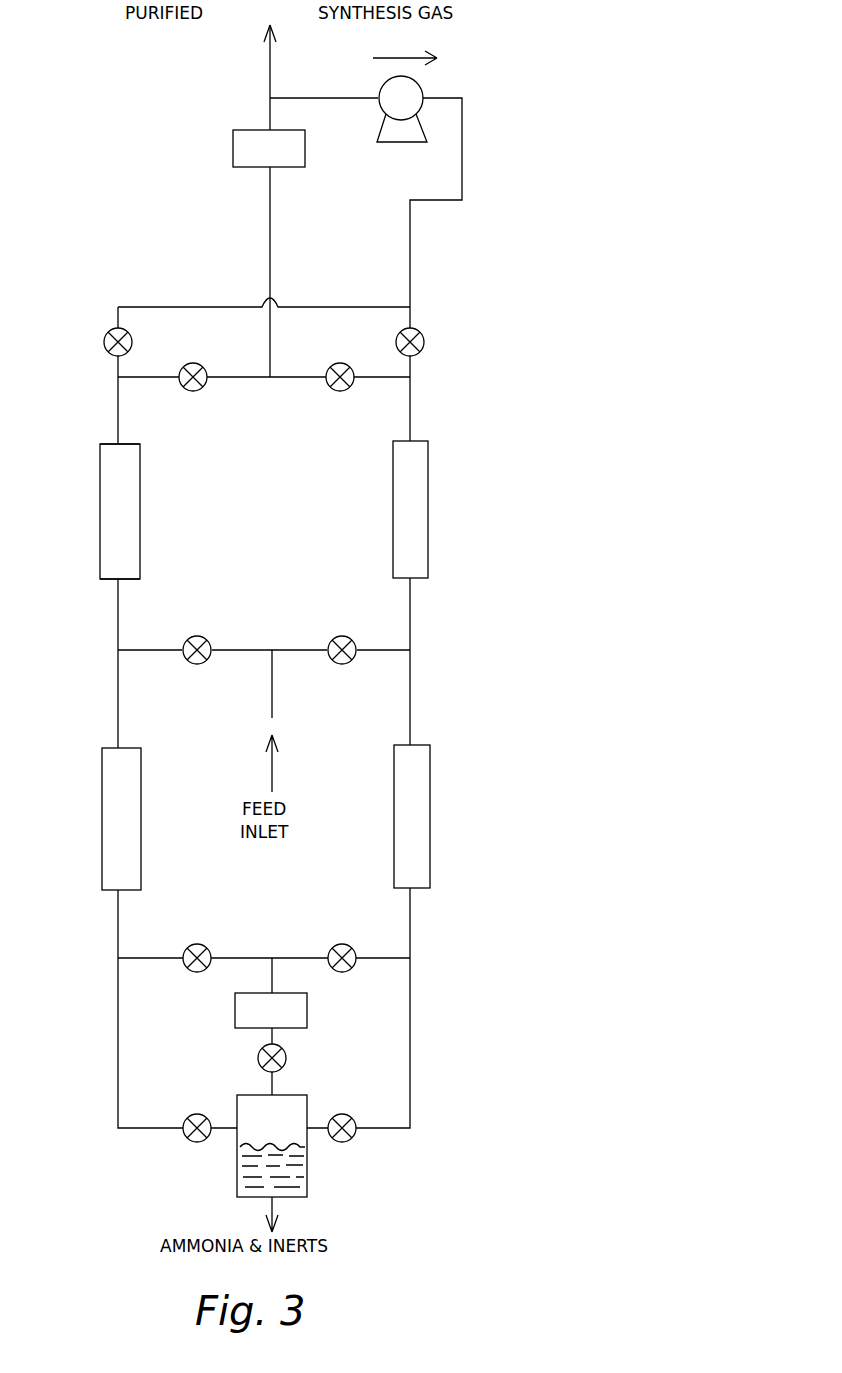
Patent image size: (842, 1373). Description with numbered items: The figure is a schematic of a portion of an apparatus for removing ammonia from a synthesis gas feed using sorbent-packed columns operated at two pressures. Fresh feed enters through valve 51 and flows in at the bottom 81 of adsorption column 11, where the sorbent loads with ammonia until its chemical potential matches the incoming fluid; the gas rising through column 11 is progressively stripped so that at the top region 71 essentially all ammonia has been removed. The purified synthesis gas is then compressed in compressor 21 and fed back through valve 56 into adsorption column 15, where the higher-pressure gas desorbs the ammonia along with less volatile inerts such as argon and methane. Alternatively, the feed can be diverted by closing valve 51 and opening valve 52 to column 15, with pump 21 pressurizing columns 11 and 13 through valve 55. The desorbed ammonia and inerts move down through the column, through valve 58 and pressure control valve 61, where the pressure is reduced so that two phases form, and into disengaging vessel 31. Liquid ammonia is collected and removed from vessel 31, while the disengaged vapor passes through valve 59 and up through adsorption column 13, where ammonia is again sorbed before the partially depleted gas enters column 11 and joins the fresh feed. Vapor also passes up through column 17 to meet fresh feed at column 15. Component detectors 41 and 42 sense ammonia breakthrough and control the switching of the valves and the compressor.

The adsorption column 11 is at (130, 518).
The adsorption column 13 is at (133, 803).
The adsorption column 15 is at (420, 518).
The column 17 is at (421, 803).
The compressor 21 is at (386, 142).
The disengaging vessel 31 is at (300, 1170).
The component detector 41 is at (297, 1016).
The component detector 42 is at (233, 163).
The valve 51 is at (197, 636).
The valve 52 is at (342, 636).
The valve 55 is at (104, 343).
The valve 56 is at (424, 343).
The valve 58 is at (342, 944).
The valve 59 is at (197, 1114).
The pressure control valve 61 is at (286, 1055).
The top of adsorption column 71 is at (110, 452).
The bottom of adsorption column 81 is at (112, 580).